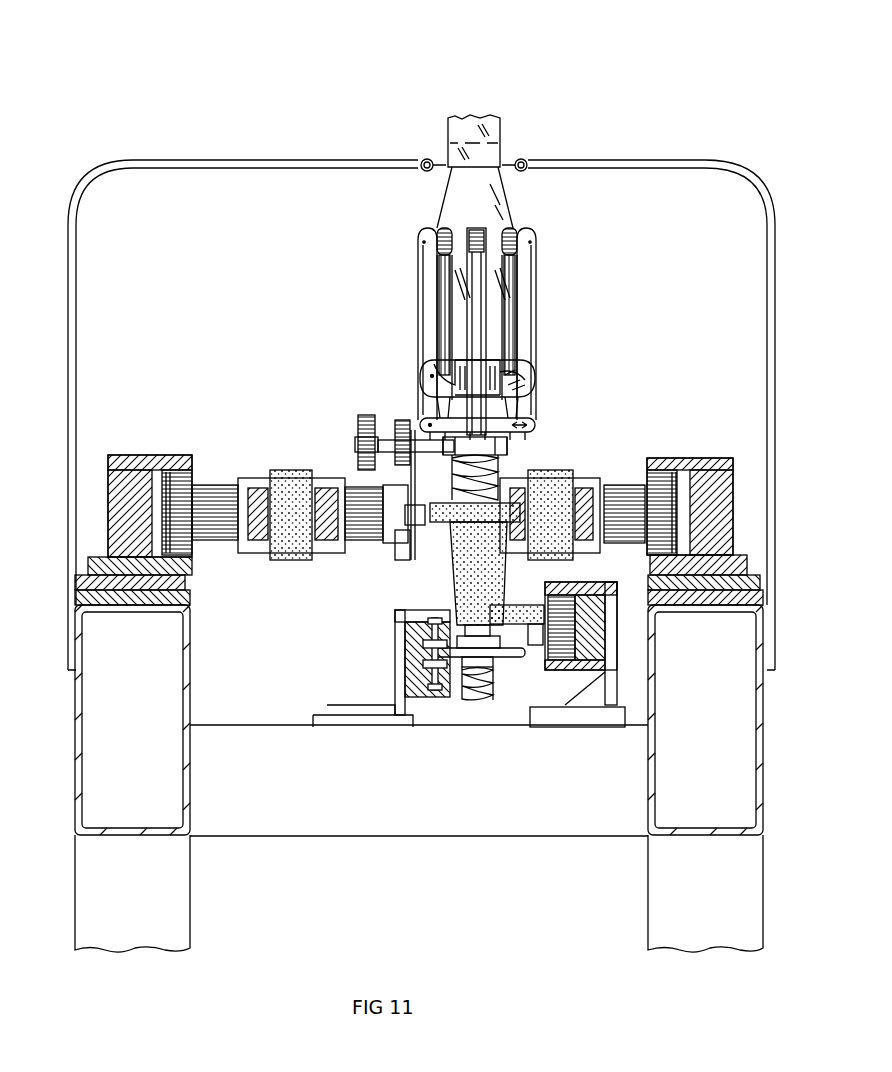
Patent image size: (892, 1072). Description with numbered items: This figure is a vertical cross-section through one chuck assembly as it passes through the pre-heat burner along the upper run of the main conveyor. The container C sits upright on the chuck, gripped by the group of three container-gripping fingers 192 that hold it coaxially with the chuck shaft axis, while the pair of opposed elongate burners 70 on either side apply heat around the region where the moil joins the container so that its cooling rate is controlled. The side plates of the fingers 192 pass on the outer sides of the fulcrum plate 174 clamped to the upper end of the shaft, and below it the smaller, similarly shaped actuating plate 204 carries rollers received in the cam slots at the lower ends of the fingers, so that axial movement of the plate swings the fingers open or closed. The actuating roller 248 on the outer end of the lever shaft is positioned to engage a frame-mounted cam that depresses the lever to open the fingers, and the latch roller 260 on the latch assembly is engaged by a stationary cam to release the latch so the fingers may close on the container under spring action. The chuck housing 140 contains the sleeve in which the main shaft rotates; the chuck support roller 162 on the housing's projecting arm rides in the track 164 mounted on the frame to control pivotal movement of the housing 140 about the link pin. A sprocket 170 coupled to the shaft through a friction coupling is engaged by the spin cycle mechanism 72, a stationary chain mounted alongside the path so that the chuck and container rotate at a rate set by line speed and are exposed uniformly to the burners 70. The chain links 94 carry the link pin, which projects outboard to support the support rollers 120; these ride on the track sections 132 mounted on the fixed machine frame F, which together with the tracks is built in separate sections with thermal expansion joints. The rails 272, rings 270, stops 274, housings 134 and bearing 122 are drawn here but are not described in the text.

The burners 70 is at (528, 153).
The frame rail 272 is at (187, 162).
The pivot ring 270 is at (421, 170).
The stop 274 is at (445, 170).
The container C is at (478, 224).
The container-gripping fingers 192 is at (414, 299).
The fulcrum plate 174 is at (533, 377).
The actuating plate 204 is at (540, 422).
The actuating roller 248 is at (360, 416).
The latch roller 260 is at (403, 420).
The housing 140 is at (455, 572).
The sprocket 170 is at (512, 660).
The spin cycle mechanism 72 is at (403, 655).
The track 164 is at (614, 575).
The chuck support roller 162 is at (595, 670).
The housing 134 is at (160, 458).
The support rollers 120 is at (178, 475).
The bearing 122 is at (648, 462).
The links 94 is at (290, 470).
The track sections 132 is at (195, 570).
The frame F is at (433, 842).